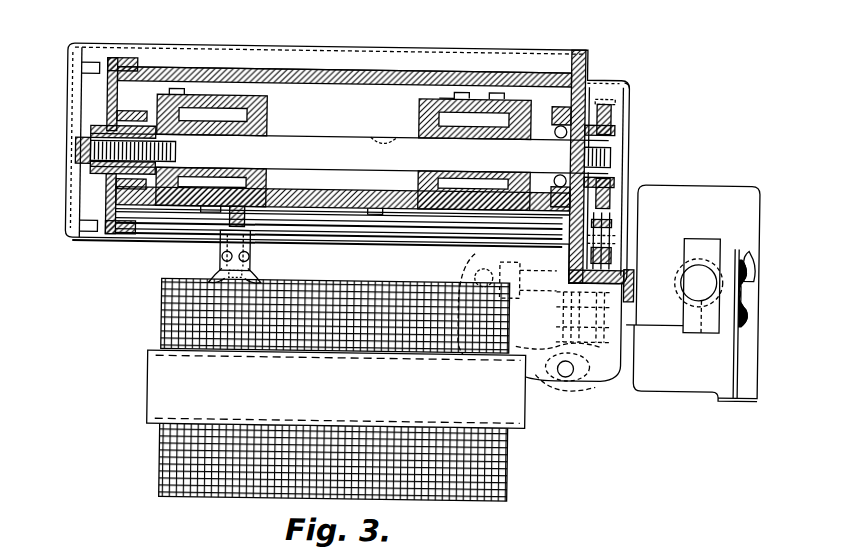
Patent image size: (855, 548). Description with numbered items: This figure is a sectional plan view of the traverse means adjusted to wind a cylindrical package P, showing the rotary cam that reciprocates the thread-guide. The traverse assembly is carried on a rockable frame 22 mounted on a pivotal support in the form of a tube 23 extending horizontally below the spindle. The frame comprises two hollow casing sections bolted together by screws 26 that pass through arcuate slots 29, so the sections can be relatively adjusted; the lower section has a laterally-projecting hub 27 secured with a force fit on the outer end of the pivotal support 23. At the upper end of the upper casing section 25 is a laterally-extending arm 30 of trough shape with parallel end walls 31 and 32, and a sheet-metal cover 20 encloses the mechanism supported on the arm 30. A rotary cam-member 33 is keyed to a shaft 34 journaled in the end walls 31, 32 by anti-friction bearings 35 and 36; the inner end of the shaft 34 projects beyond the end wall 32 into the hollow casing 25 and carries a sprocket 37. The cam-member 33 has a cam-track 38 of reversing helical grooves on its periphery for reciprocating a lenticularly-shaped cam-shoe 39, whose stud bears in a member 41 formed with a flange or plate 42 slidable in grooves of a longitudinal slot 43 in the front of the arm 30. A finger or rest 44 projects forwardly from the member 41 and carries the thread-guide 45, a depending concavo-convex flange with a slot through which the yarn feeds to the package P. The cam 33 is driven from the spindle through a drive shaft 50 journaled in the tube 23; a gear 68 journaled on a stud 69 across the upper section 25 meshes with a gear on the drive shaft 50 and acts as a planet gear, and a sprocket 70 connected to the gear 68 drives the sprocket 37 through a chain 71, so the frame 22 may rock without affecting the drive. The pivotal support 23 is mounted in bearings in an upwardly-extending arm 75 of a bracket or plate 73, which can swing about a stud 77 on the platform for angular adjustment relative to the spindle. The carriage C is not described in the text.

The sheet-metal cover 20 is at (327, 47).
The rockable frame 22 is at (642, 85).
The tube 23 is at (747, 321).
The upper casing section 25 is at (628, 75).
The screws 26 is at (583, 370).
The laterally-projecting hub 27 is at (667, 320).
The arcuate slots 29 is at (599, 370).
The laterally-extending arm 30 is at (208, 72).
The end wall 31 is at (106, 93).
The end wall 32 is at (570, 85).
The rotary cam-member 33 is at (360, 101).
The shaft 34 is at (342, 153).
The anti-friction bearing 35 is at (122, 145).
The anti-friction bearing 36 is at (562, 108).
The sprocket 37 is at (617, 110).
The cam-track 38 is at (448, 92).
The cam-shoe 39 is at (258, 188).
The member 41 is at (257, 248).
The flange or plate 42 is at (284, 236).
The longitudinal slot 43 is at (373, 230).
The finger or rest 44 is at (226, 251).
The thread-guide 45 is at (258, 270).
The drive shaft 50 is at (752, 242).
The gear 68 is at (566, 320).
The stud 69 is at (632, 285).
The sprocket 70 is at (607, 250).
The chain 71 is at (603, 215).
The bracket or plate 73 is at (705, 180).
The upwardly-extending arm 75 is at (700, 232).
The stud 77 is at (703, 326).
The carriage C is at (336, 389).
The package P is at (165, 463).